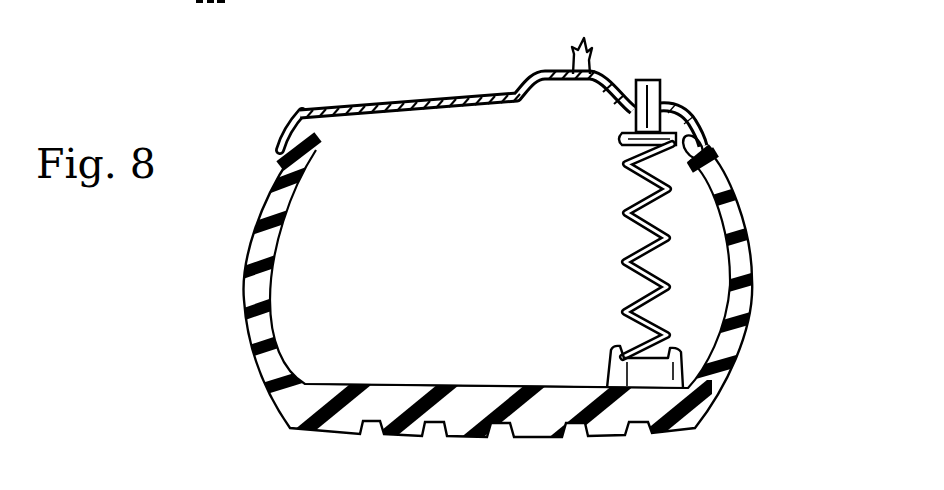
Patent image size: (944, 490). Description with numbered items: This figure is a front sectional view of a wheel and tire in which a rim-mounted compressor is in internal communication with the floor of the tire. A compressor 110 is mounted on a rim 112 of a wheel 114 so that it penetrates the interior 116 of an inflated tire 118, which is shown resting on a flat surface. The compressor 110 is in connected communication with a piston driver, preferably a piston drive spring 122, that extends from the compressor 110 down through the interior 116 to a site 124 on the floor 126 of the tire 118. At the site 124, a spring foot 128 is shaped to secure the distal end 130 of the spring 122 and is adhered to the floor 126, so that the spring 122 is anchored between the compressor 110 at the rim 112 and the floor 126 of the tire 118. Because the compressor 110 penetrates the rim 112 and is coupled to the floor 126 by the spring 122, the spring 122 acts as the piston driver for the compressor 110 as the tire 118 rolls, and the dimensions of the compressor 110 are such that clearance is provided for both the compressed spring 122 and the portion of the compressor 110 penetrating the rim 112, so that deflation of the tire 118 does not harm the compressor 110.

The compressor 110 is at (662, 92).
The rim 112 is at (703, 132).
The wheel 114 is at (592, 53).
The interior 116 is at (504, 231).
The inflated tire 118 is at (243, 292).
The piston drive spring 122 is at (660, 215).
The site 124 is at (692, 424).
The floor 126 is at (413, 386).
The spring foot 128 is at (605, 360).
The distal end 130 is at (722, 374).